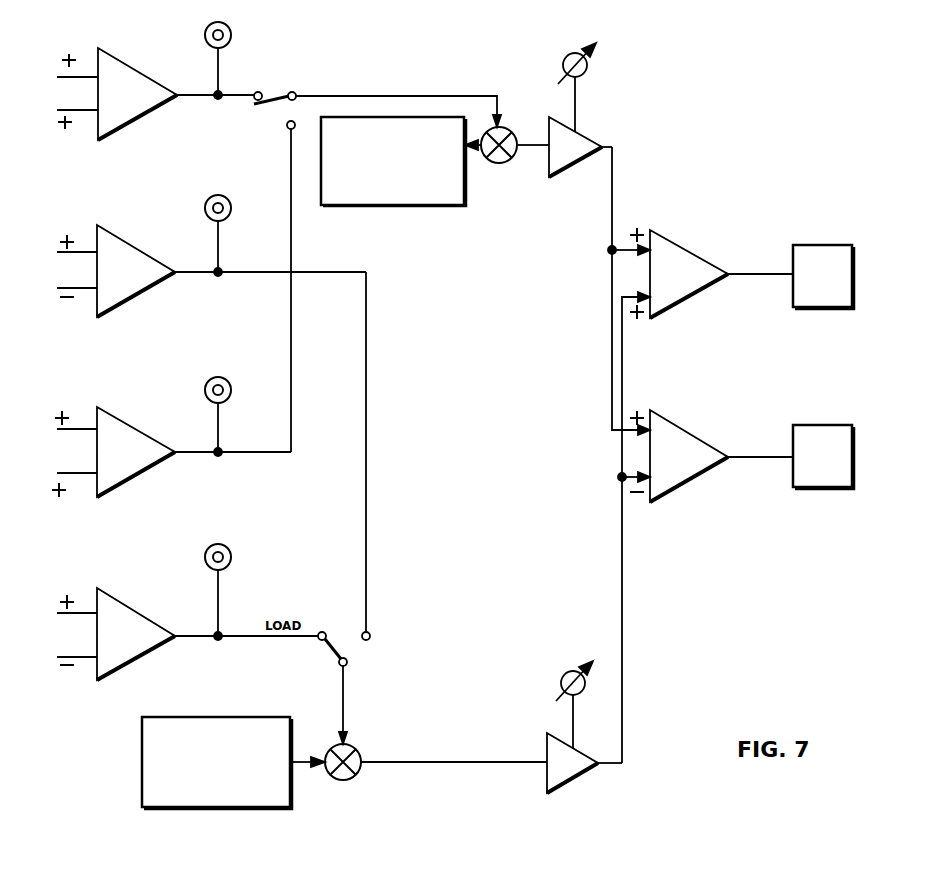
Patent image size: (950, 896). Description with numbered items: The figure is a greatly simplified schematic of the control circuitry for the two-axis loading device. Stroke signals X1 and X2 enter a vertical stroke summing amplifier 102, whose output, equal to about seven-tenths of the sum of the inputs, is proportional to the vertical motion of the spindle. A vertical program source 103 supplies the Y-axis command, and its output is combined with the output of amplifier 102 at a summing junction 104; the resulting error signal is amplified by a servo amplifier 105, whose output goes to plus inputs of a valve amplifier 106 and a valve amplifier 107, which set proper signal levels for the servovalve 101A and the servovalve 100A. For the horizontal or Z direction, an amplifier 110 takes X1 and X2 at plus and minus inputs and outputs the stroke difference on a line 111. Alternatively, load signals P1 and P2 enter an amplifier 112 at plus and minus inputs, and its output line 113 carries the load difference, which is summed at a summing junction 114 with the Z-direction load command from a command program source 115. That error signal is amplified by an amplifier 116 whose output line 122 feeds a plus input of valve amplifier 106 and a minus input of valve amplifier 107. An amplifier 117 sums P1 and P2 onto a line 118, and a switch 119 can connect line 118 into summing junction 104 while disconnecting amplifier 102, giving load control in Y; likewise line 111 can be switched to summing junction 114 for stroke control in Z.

The vertical stroke summing amplifier 102 is at (134, 72).
The switch 119 is at (301, 106).
The vertical program source 103 is at (428, 117).
The summing junction 104 is at (513, 130).
The servo amplifier 105 is at (586, 138).
The valve amplifier 106 is at (680, 248).
The valve amplifier 107 is at (680, 430).
The servovalve 101A is at (836, 248).
The servovalve 100A is at (836, 427).
The amplifier 110 is at (131, 251).
The line 118 is at (291, 235).
The amplifier 117 is at (137, 425).
The line 111 is at (366, 378).
The amplifier 112 is at (133, 618).
The output line 113 is at (190, 633).
The command program source 115 is at (191, 718).
The summing junction 114 is at (361, 772).
The amplifier 116 is at (576, 780).
The output line 122 is at (622, 597).